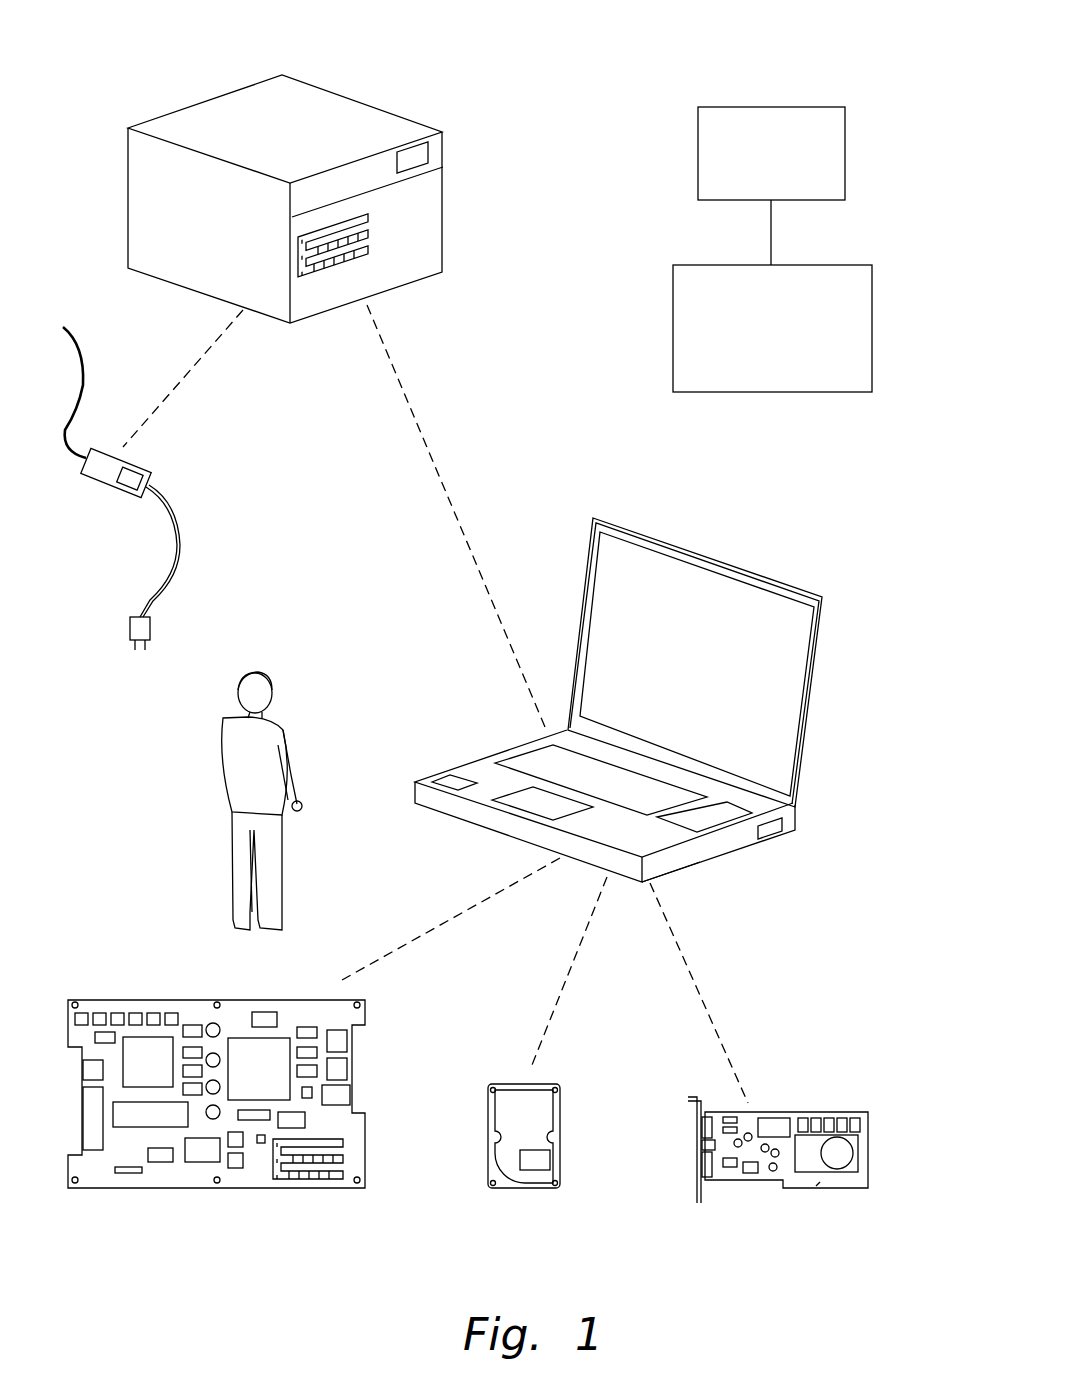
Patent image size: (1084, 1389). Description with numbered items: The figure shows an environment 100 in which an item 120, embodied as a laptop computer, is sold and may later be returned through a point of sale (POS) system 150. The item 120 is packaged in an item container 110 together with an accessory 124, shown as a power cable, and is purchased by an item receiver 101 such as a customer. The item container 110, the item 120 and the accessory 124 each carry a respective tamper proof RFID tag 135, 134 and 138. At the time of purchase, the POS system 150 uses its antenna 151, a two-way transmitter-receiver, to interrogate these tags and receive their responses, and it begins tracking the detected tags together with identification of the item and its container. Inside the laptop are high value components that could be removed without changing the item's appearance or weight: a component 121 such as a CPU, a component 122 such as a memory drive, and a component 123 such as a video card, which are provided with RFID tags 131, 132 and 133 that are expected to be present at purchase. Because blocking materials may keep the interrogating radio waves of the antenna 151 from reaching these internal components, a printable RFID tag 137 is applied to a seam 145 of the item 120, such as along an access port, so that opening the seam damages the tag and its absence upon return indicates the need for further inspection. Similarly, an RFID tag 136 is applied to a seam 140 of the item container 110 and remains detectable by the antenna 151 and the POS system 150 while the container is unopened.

The environment 100 is at (150, 43).
The item container 110 is at (128, 172).
The seam of the item container 140 is at (348, 175).
The RFID tag 136 is at (411, 154).
The RFID tag 135 is at (363, 237).
The antenna 151 is at (845, 153).
The POS system 150 is at (872, 296).
The accessory 124 is at (108, 487).
The RFID tag 138 is at (137, 465).
The item receiver 101 is at (223, 727).
The item 120 is at (517, 745).
The RFID tag 134 is at (450, 783).
The RFID tag 137 is at (768, 830).
The seam 145 is at (703, 852).
The component 121 is at (367, 1137).
The RFID tag 131 is at (307, 1182).
The component 122 is at (560, 1120).
The RFID tag 132 is at (545, 1160).
The component 123 is at (868, 1150).
The RFID tag 133 is at (775, 1125).